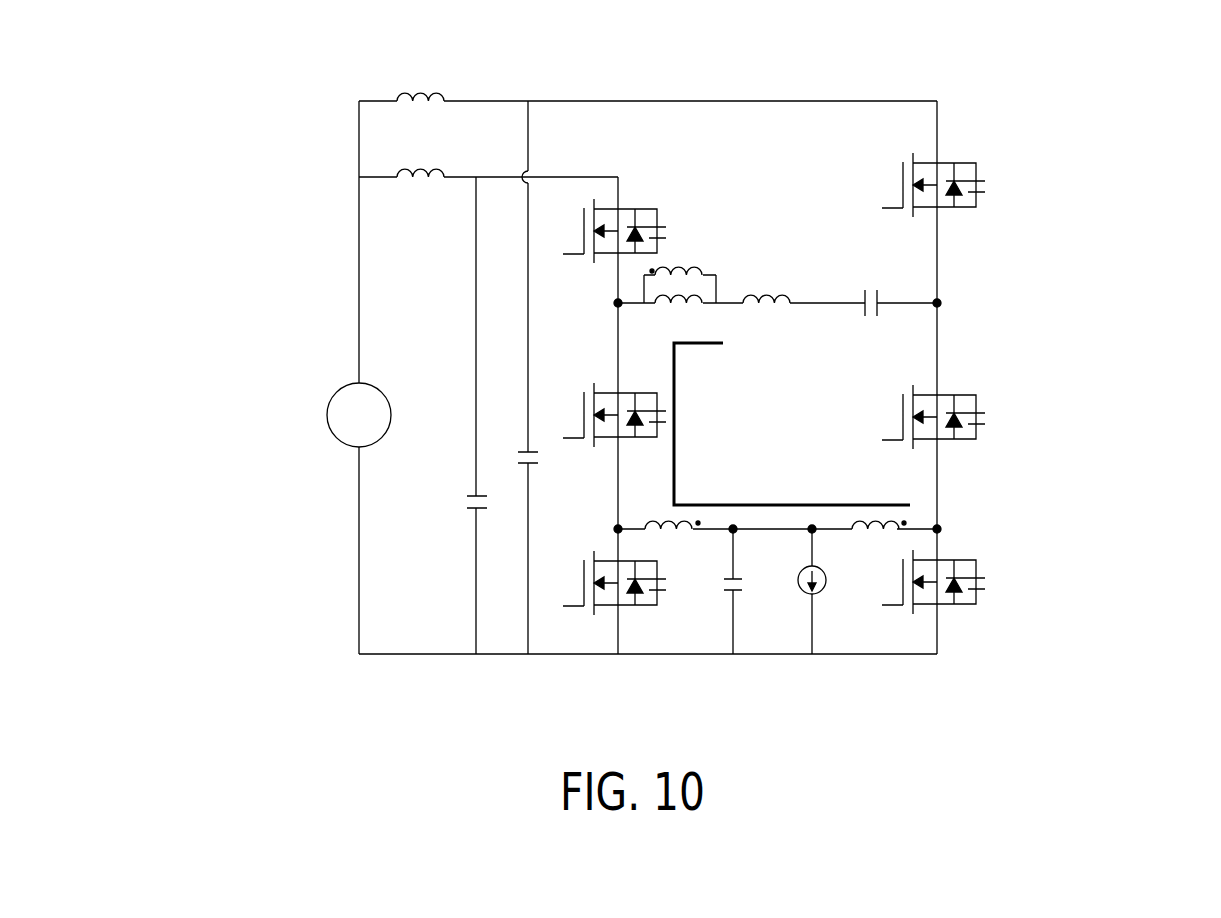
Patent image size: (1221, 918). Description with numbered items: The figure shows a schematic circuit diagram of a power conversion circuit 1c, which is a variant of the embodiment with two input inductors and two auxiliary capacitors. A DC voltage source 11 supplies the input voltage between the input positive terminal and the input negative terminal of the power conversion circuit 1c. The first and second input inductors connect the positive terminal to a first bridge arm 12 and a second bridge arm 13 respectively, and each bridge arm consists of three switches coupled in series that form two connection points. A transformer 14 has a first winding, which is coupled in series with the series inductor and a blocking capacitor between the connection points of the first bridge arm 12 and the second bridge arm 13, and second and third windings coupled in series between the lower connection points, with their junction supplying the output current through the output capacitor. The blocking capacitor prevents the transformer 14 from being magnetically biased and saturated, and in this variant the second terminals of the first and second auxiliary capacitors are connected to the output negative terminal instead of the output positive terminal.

The power conversion circuit 1c is at (1192, 99).
The DC voltage source 11 is at (315, 385).
The first bridge arm 12 is at (636, 190).
The second bridge arm 13 is at (960, 104).
The transformer 14 is at (697, 347).